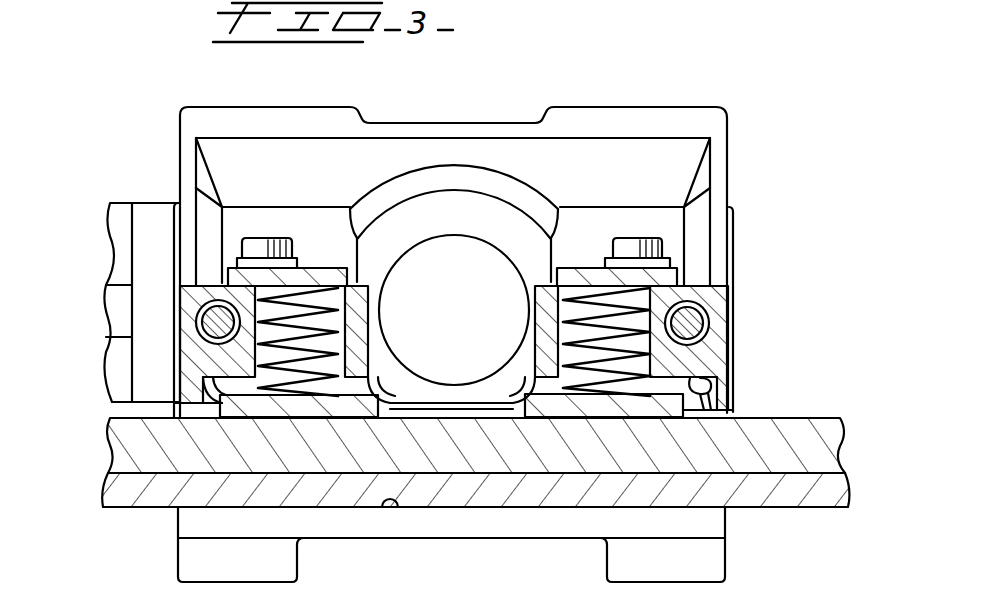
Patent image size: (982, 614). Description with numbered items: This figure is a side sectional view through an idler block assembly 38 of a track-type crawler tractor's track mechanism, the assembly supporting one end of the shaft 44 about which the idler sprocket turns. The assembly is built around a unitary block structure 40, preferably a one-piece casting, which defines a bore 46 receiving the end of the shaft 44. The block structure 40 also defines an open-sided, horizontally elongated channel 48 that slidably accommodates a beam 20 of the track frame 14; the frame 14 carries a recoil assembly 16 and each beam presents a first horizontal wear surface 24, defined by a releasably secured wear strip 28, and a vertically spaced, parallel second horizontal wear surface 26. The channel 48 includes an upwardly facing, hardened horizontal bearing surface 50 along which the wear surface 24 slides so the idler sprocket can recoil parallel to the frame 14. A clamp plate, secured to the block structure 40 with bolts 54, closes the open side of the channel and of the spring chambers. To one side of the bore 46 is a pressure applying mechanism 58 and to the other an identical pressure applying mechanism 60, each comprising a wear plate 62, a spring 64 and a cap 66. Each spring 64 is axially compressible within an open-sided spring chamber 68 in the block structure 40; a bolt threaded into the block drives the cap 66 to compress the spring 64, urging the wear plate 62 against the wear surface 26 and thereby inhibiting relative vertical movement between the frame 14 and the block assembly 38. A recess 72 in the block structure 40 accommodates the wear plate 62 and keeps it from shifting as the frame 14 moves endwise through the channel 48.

The track frame 14 is at (780, 511).
The recoil assembly 16 is at (133, 199).
The beam 20 is at (800, 437).
The first horizontal wear surface 24 is at (147, 510).
The second horizontal wear surface 26 is at (120, 414).
The wear strip 28 is at (123, 500).
The block assembly 38 is at (755, 158).
The unitary block structure 40 is at (668, 122).
The shaft 44 is at (465, 316).
The bore 46 is at (418, 258).
The channel 48 is at (718, 413).
The bearing surface 50 is at (397, 500).
The bolts 54 is at (198, 323).
The pressure applying mechanism 58 is at (660, 298).
The pressure applying mechanism 60 is at (229, 289).
The wear plate 62 is at (603, 416).
The spring 64 is at (693, 313).
The cap 66 is at (667, 270).
The spring chamber 68 is at (563, 282).
The recess 72 is at (711, 382).